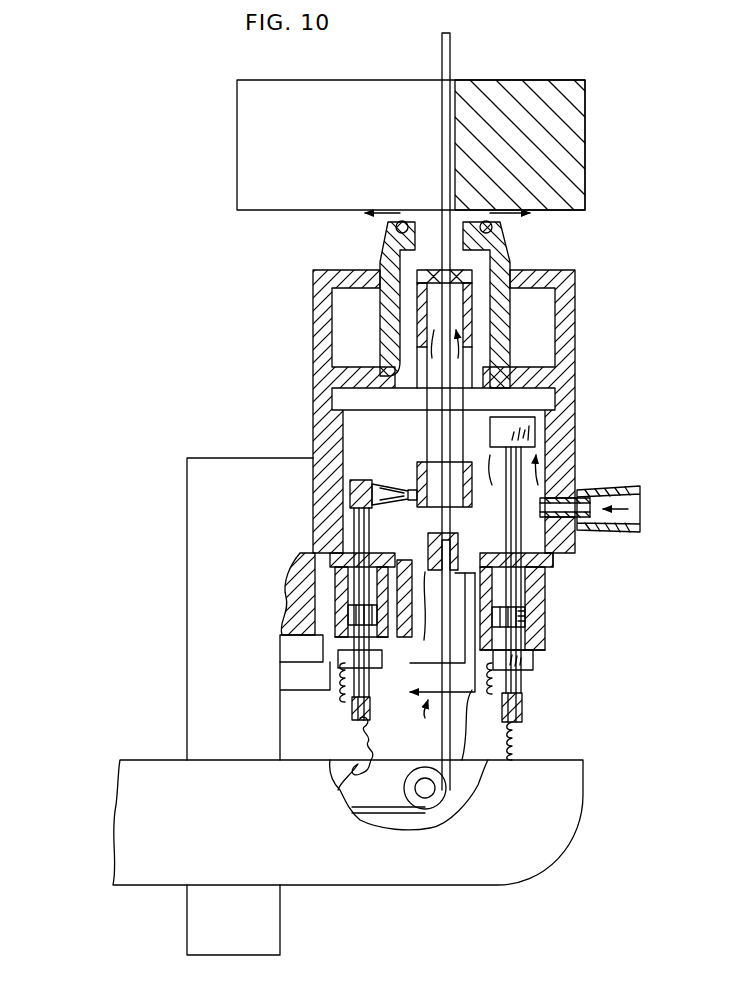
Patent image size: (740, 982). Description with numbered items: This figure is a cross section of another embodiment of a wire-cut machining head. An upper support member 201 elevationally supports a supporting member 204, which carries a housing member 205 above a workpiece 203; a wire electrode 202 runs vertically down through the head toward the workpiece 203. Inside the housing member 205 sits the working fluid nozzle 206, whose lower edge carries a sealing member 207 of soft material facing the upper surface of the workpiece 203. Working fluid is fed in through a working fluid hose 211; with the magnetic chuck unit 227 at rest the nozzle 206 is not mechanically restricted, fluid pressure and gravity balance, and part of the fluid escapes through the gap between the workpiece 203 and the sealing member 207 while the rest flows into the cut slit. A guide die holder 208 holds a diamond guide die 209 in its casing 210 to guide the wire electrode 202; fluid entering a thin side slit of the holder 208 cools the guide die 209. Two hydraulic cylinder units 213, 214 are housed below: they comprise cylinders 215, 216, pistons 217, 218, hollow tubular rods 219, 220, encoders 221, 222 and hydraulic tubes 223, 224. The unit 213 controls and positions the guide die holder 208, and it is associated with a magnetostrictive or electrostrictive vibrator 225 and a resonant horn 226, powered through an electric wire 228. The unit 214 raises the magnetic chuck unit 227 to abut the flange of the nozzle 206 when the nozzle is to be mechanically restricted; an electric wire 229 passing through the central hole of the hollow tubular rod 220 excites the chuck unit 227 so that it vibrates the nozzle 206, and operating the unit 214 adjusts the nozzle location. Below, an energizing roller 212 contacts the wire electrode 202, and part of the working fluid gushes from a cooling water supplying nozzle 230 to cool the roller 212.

The upper support member 201 is at (130, 806).
The wire electrode 202 is at (452, 48).
The workpiece 203 is at (585, 118).
The supporting member 204 is at (187, 718).
The housing member 205 is at (565, 440).
The working fluid nozzle 206 is at (510, 240).
The sealing member 207 is at (396, 229).
The guide die holder 208 is at (398, 350).
The guide die 209 is at (410, 278).
The casing 210 is at (420, 286).
The working fluid hose 211 is at (638, 533).
The energizing roller 212 is at (440, 795).
The hydraulic cylinder unit 213 is at (428, 752).
The hydraulic cylinder unit 214 is at (560, 706).
The cylinder 215 is at (298, 565).
The cylinder 216 is at (545, 586).
The piston 217 is at (350, 606).
The piston 218 is at (530, 618).
The hollow tubular rod 219 is at (352, 526).
The hollow tubular rod 220 is at (522, 695).
The encoder 221 is at (380, 705).
The encoder 222 is at (535, 659).
The hydraulic tube 223 is at (286, 655).
The hydraulic tube 224 is at (424, 690).
The vibrator 225 is at (359, 480).
The resonant horn 226 is at (394, 480).
The magnetic chuck unit 227 is at (535, 428).
The electric wire 228 is at (360, 724).
The electric wire 229 is at (518, 749).
The cooling water supplying nozzle 230 is at (429, 599).